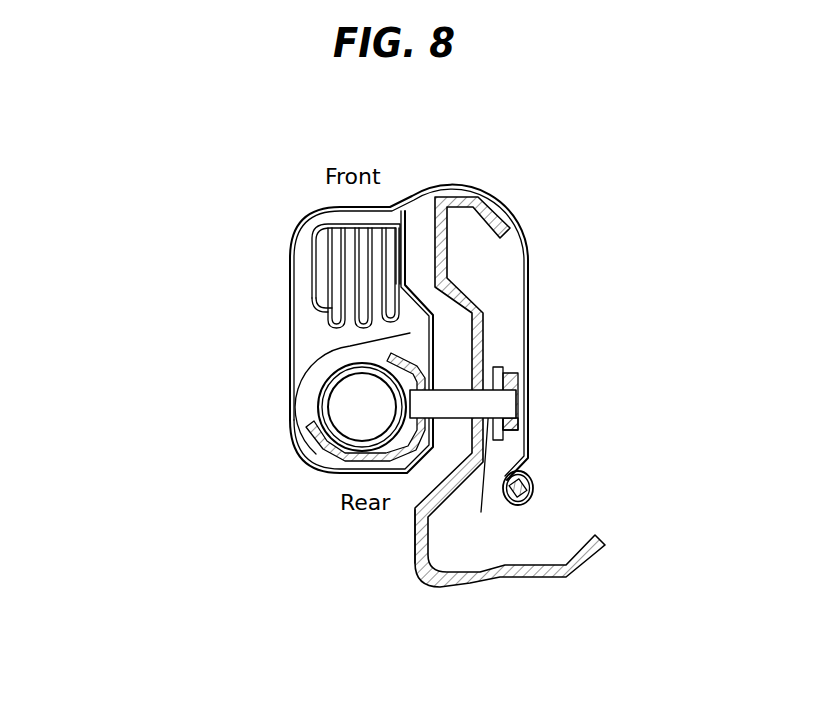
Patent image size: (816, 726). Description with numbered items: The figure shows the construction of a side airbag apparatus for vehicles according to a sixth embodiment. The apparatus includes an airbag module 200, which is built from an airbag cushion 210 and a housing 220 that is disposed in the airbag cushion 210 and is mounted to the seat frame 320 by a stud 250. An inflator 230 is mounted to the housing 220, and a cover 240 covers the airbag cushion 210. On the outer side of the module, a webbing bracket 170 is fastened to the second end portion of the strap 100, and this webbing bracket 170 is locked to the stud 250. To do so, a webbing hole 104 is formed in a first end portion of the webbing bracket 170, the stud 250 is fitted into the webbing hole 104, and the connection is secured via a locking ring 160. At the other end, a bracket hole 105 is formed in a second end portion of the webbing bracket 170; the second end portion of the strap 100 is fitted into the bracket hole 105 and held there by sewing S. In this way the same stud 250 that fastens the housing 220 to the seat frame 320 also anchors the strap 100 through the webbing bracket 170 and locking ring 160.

The strap 100 is at (413, 205).
The webbing hole 104 is at (472, 478).
The bracket hole 105 is at (569, 500).
The locking ring 160 is at (507, 383).
The webbing bracket 170 is at (507, 437).
The airbag module 200 is at (332, 320).
The airbag cushion 210 is at (325, 228).
The housing 220 is at (316, 453).
The inflator 230 is at (322, 398).
The cover 240 is at (274, 245).
The stud 250 is at (507, 408).
The seat frame 320 is at (420, 545).
The sewing S is at (532, 477).